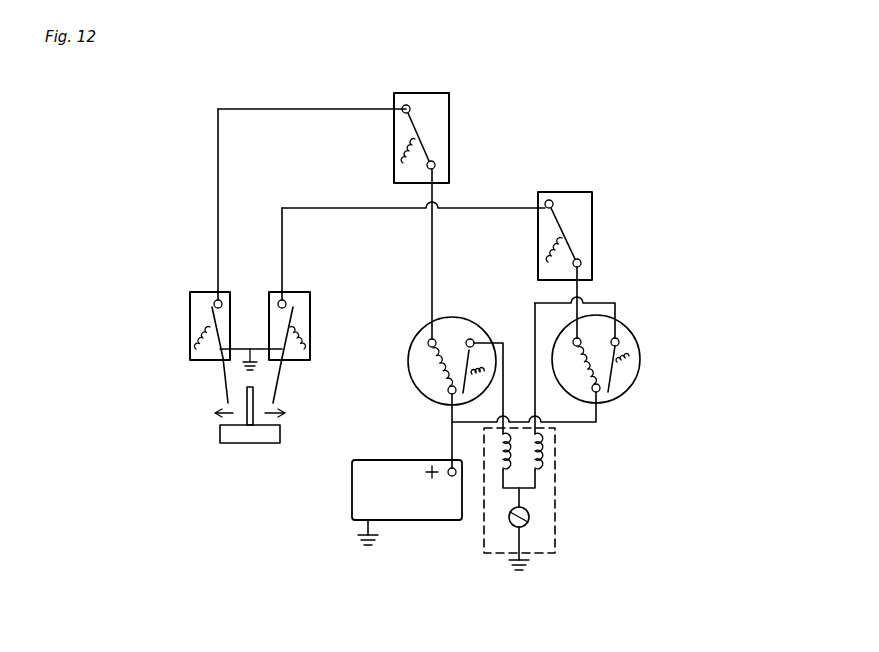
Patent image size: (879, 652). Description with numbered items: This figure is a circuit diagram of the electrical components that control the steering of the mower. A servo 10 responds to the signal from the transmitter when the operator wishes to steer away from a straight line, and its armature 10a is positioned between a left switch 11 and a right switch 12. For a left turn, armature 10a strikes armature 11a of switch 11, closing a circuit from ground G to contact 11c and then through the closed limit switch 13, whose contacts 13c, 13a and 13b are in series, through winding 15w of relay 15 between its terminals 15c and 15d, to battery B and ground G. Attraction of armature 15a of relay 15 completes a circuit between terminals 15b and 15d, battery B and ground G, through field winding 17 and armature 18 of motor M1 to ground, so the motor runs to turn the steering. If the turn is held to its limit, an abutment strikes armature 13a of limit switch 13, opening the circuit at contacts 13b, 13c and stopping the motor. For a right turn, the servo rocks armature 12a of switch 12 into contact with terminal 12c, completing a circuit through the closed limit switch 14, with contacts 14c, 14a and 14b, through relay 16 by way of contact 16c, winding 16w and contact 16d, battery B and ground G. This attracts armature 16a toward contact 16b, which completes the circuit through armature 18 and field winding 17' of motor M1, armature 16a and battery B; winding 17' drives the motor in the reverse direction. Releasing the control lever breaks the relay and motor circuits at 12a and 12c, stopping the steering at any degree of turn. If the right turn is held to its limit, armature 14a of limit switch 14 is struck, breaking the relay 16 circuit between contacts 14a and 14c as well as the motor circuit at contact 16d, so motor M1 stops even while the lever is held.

The servo 10 is at (228, 445).
The armature of the servo 10a is at (253, 415).
The switch 11 is at (195, 315).
The armature of switch 11a is at (222, 368).
The contact 11c is at (220, 298).
The switch 12 is at (312, 300).
The armature of switch 12a is at (277, 380).
The terminal 12c is at (285, 298).
The limit switch 13 is at (410, 93).
The armature of limit switch 13a is at (422, 140).
The contact 13b is at (436, 168).
The contact 13c is at (403, 113).
The limit switch 14 is at (586, 222).
The armature of limit switch 14a is at (565, 218).
The contact 14b is at (582, 263).
The contact 14c is at (551, 200).
The relay 15 is at (452, 317).
The armature of relay 15a is at (464, 350).
The terminal 15b is at (476, 340).
The terminal 15c is at (430, 339).
The terminal 15d is at (450, 394).
The winding of relay 15w is at (432, 362).
The relay 16 is at (630, 372).
The armature of relay 16a is at (610, 375).
The contact 16b is at (620, 342).
The contact 16c is at (583, 340).
The contact 16d is at (600, 393).
The winding of relay 16w is at (585, 368).
The field winding 17 is at (477, 500).
The field winding 17' is at (571, 460).
The armature of motor 18 is at (530, 520).
The battery B is at (362, 500).
The ground G is at (242, 357).
The motor M1 is at (550, 543).